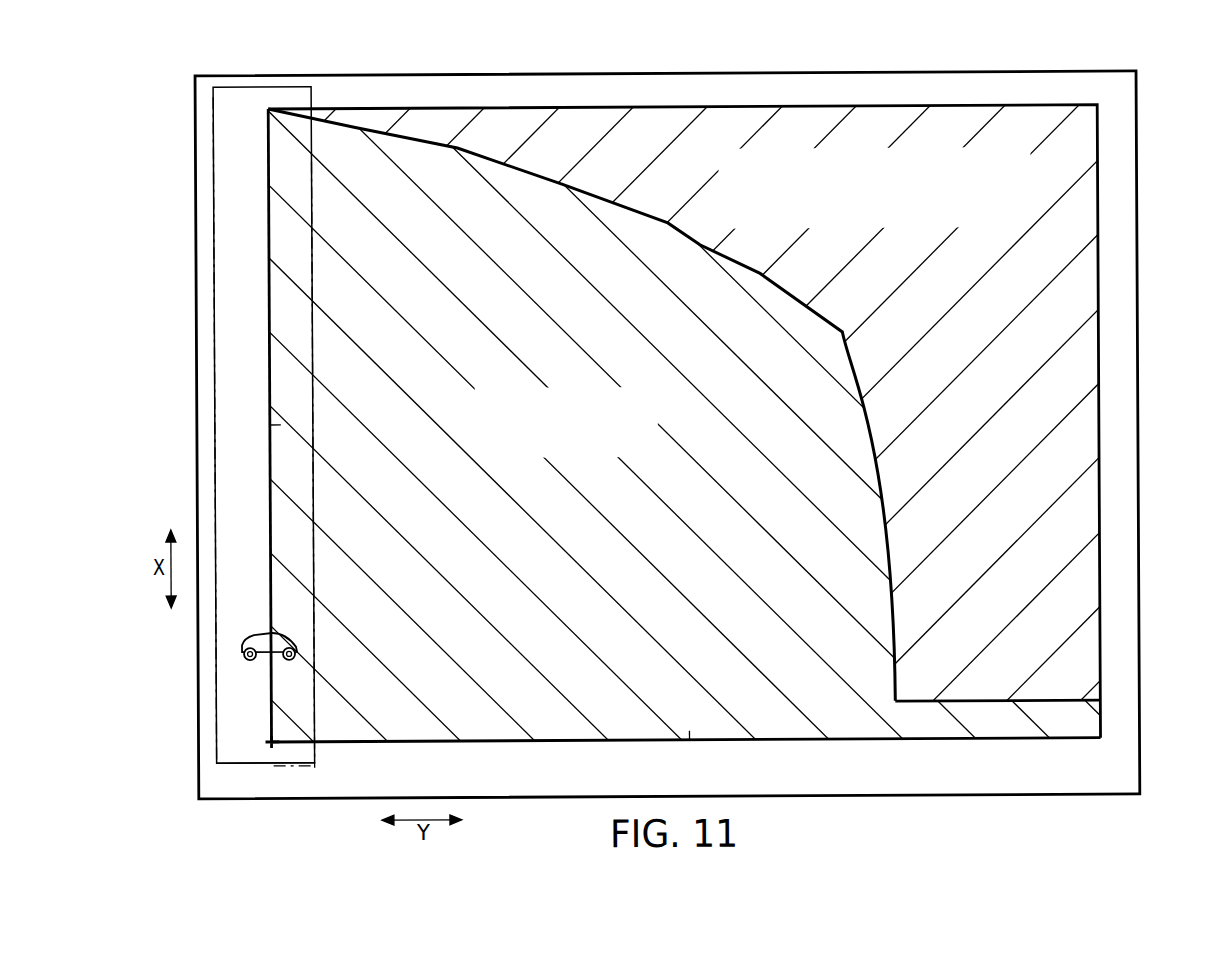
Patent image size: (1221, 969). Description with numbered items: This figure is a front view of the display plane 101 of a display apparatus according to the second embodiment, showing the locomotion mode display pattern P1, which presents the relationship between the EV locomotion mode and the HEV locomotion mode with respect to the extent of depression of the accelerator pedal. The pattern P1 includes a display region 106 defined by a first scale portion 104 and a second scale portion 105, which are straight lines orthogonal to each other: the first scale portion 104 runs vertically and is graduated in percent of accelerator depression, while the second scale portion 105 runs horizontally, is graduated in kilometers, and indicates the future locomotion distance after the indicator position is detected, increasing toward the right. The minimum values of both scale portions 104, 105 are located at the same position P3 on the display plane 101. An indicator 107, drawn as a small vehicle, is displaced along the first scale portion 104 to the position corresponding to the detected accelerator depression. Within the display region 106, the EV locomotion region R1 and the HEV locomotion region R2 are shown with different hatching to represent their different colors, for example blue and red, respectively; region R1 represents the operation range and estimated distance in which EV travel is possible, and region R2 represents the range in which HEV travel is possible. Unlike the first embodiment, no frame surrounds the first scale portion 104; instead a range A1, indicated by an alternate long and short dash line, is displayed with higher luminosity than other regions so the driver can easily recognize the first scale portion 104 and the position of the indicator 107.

The display plane 101 is at (563, 92).
The first scale portion 104 is at (269, 351).
The second scale portion 105 is at (986, 742).
The display region 106 is at (694, 123).
The indicator 107 is at (239, 650).
The locomotion mode display pattern P1 is at (889, 111).
The position P3 is at (268, 743).
The EV locomotion region R1 is at (856, 729).
The HEV locomotion region R2 is at (1083, 384).
The range A1 is at (231, 765).